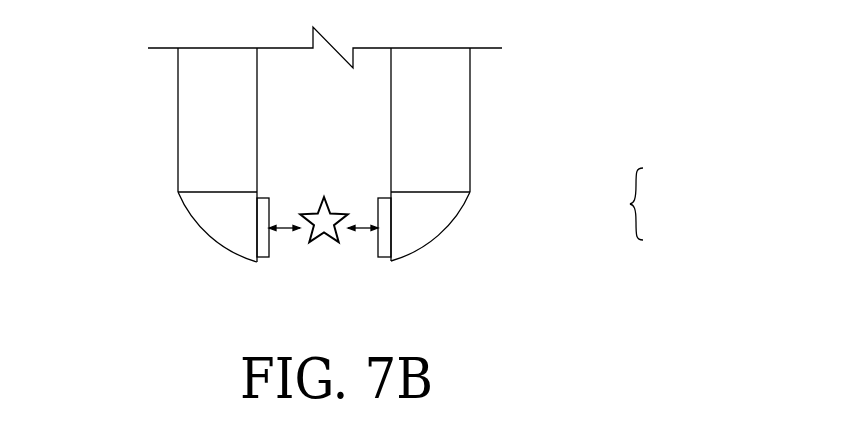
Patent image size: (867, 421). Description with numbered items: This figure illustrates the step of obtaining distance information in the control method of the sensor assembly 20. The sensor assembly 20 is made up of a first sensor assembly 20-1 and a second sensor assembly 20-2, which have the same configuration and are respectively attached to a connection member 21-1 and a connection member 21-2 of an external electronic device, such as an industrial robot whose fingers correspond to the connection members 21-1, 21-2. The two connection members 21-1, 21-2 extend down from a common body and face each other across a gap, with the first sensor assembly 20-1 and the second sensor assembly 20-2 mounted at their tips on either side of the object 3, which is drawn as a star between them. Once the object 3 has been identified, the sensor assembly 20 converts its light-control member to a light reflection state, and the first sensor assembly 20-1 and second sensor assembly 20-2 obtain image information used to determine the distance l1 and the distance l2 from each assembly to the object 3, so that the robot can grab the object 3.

The object 3 is at (325, 198).
The sensor assembly 20 is at (645, 204).
The first sensor assembly 20-1 is at (182, 220).
The second sensor assembly 20-2 is at (462, 221).
The connection member 21-1 is at (170, 108).
The connection member 21-2 is at (478, 108).
The distance l1 is at (292, 229).
The distance l2 is at (353, 229).